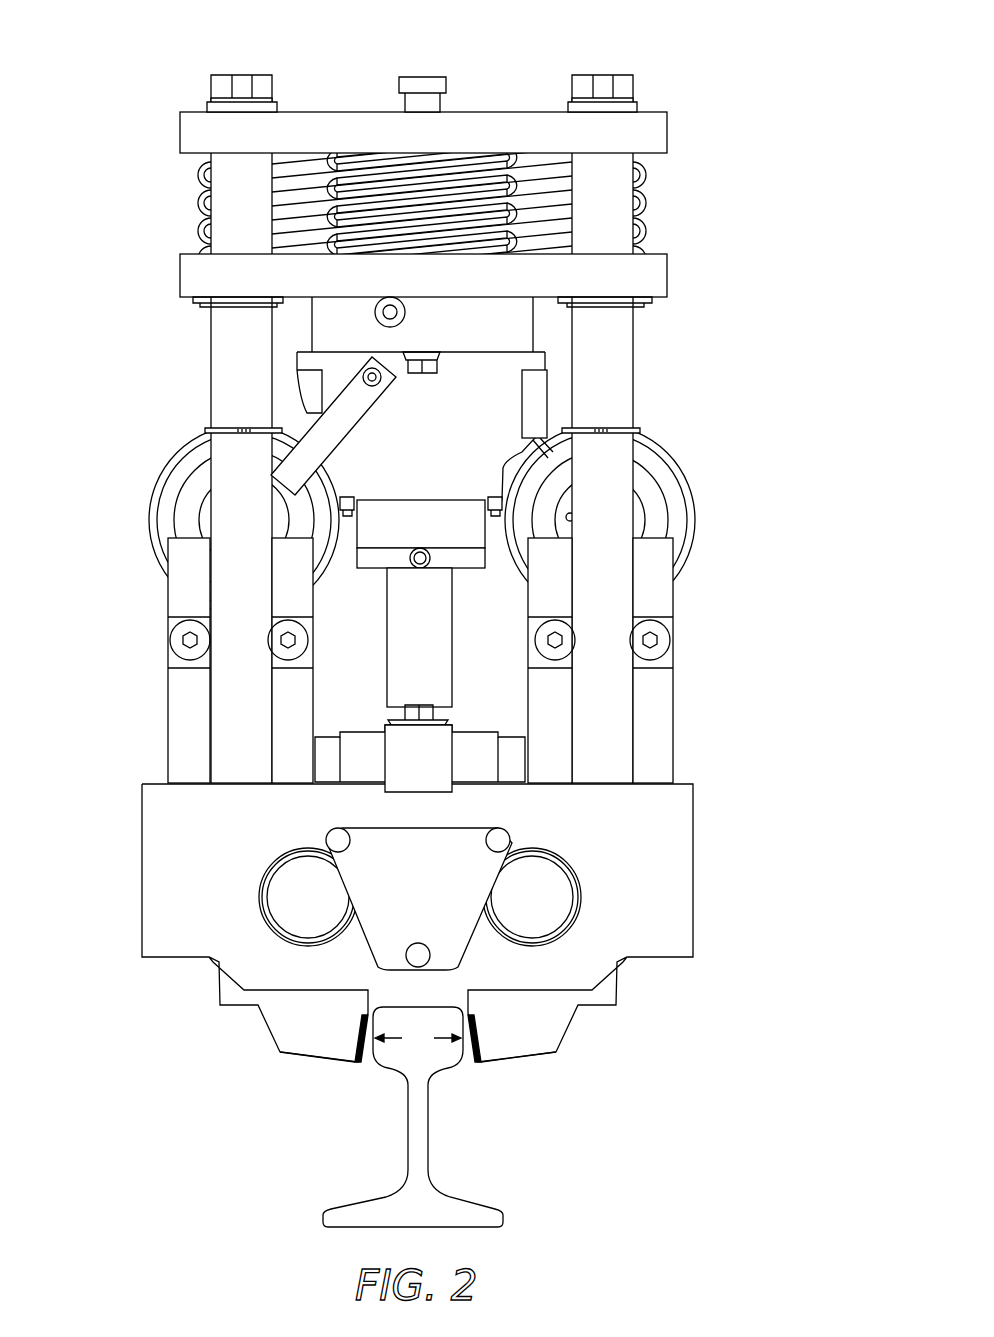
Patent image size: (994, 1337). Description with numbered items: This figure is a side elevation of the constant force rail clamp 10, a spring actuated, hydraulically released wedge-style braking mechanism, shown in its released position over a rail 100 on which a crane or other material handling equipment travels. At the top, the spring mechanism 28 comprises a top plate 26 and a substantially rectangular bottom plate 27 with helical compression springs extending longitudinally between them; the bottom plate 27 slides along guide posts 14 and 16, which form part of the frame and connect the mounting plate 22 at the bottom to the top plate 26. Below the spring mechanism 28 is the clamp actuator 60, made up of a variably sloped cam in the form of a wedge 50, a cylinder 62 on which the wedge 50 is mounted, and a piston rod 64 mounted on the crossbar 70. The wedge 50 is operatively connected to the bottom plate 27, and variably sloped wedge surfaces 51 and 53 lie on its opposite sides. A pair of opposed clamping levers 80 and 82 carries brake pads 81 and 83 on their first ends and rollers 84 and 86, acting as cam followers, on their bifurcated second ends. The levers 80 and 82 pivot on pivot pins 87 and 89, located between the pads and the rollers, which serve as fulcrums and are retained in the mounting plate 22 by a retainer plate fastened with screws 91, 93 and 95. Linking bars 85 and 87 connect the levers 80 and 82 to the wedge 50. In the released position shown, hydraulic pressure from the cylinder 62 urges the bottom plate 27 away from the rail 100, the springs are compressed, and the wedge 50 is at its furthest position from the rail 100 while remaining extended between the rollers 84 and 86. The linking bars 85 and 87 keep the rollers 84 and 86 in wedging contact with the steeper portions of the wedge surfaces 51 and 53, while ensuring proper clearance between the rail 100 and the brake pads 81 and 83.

The constant force rail clamp 10 is at (736, 54).
The top plate 26 is at (305, 127).
The bottom plate 27 is at (245, 277).
The spring mechanism 28 is at (668, 215).
The guide post 14 is at (235, 353).
The guide post 16 is at (610, 388).
The wedge 50 is at (475, 395).
The wedge surface 51 is at (305, 423).
The pivot pin 87 is at (550, 415).
The linking bar 85 is at (305, 455).
The roller 86 is at (667, 473).
The roller 84 is at (163, 517).
The wedge surface 53 is at (505, 440).
The cylinder 62 is at (445, 530).
The piston rod 64 is at (403, 627).
The clamp actuator 60 is at (421, 583).
The clamping lever 80 is at (190, 735).
The clamping lever 82 is at (655, 695).
The crossbar 70 is at (430, 755).
The mounting plate 22 is at (655, 878).
The screw 91 is at (500, 845).
The screw 93 is at (335, 838).
The pivot pin 89 is at (550, 900).
The screw 95 is at (418, 957).
The brake pad 81 is at (370, 1062).
The brake pad 83 is at (470, 1062).
The rail 100 is at (472, 1205).